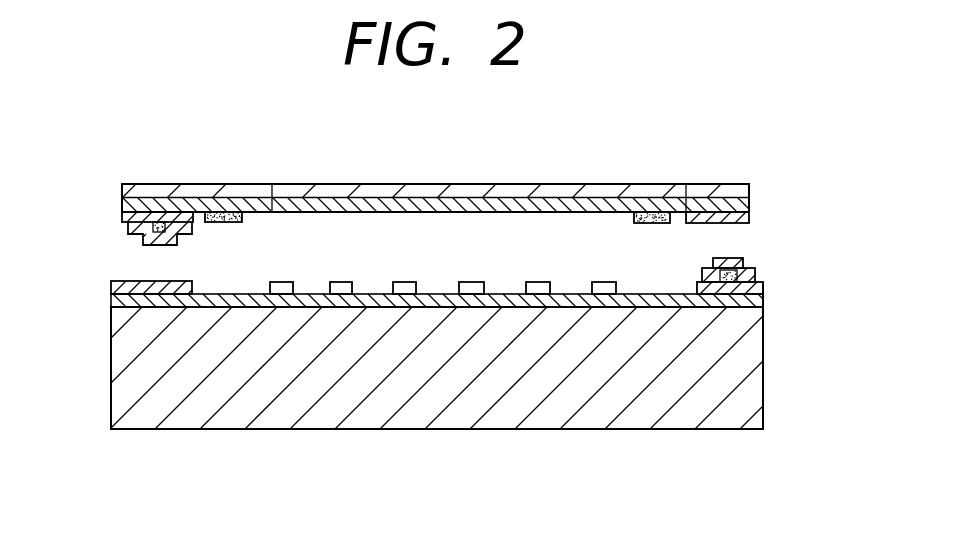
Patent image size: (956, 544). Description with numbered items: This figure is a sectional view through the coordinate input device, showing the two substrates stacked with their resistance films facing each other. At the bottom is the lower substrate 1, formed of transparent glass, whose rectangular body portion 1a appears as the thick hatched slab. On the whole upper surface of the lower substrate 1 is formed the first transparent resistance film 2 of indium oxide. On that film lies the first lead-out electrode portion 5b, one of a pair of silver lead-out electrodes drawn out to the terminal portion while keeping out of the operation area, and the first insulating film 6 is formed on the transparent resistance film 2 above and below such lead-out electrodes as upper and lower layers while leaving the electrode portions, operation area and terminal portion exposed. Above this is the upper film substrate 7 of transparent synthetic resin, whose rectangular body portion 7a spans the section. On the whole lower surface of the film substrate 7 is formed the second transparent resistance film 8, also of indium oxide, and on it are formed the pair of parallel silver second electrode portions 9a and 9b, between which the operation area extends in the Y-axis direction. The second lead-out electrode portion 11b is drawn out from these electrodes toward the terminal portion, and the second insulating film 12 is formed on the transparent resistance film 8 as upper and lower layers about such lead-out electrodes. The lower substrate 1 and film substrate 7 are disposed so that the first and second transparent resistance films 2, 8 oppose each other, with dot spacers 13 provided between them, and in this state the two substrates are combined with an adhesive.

The lower substrate 1 is at (243, 429).
The body portion 1a is at (552, 415).
The first transparent resistance film 2 is at (646, 296).
The first lead-out electrode portion 5b is at (766, 298).
The first insulating film 6 is at (111, 284).
The upper film substrate 7 is at (655, 184).
The body portion 7a is at (604, 192).
The second transparent resistance film 8 is at (463, 206).
The second electrode portion 9a is at (274, 193).
The second electrode portion 9b is at (688, 186).
The second lead-out electrode portion 11b is at (160, 226).
The second insulating film 12 is at (140, 240).
The dot spacers 13 is at (542, 282).